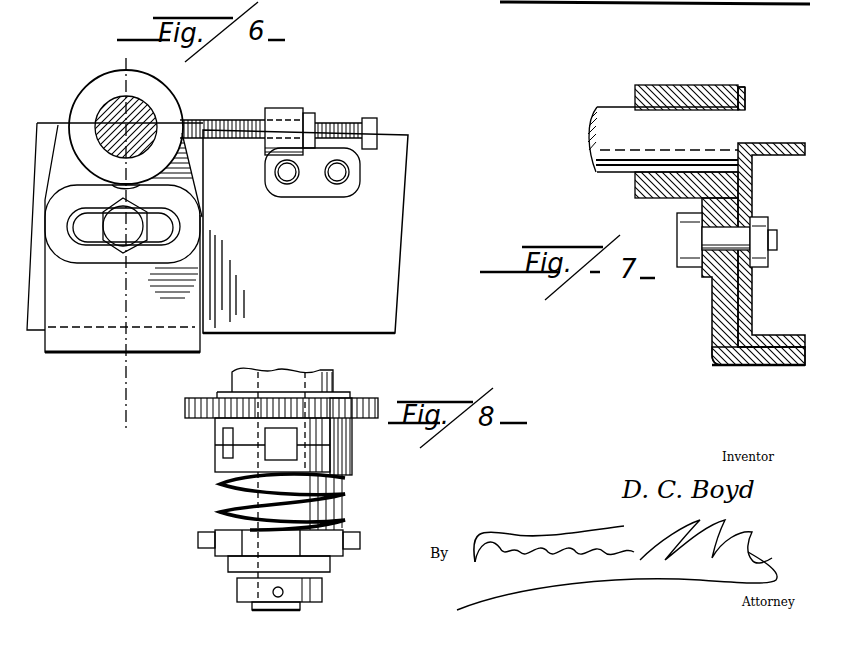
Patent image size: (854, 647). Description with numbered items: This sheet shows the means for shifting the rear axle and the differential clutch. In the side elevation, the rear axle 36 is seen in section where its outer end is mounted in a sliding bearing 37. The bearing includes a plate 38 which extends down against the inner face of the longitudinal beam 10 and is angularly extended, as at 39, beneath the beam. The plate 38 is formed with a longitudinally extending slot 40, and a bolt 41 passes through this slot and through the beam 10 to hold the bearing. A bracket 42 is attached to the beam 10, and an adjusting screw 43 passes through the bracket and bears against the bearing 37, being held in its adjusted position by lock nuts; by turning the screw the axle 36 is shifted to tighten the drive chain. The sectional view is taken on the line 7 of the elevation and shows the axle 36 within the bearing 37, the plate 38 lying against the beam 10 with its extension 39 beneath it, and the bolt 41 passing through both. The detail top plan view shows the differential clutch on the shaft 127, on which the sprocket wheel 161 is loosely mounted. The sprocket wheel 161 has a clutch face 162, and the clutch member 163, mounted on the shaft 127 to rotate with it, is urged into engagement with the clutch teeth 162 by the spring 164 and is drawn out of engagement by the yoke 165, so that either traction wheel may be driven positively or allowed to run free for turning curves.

In FIG. 6, the section line 7— 7 is at (118, 240).
In FIG. 6, the longitudinal beam 10 is at (358, 298).
In FIG. 7, the longitudinal beam 10 is at (720, 0).
In FIG. 6, the rear axle 36 is at (110, 122).
In FIG. 7, the rear axle 36 is at (610, 145).
In FIG. 6, the sliding bearing 37 is at (163, 101).
In FIG. 7, the sliding bearing 37 is at (635, 91).
In FIG. 6, the plate 38 is at (93, 317).
In FIG. 7, the plate 38 is at (720, 315).
In FIG. 6, the angular extension 39 is at (143, 352).
In FIG. 7, the angular extension 39 is at (778, 368).
In FIG. 6, the slot 40 is at (172, 220).
In FIG. 6, the bolt 41 is at (123, 228).
In FIG. 7, the bolt 41 is at (769, 258).
In FIG. 6, the bracket 42 is at (288, 110).
In FIG. 6, the adjusting screw 43 is at (217, 119).
In FIG. 8, the sprocket wheel 161 is at (190, 407).
In FIG. 8, the clutch face 162 is at (215, 432).
In FIG. 8, the clutch member 163 is at (348, 463).
In FIG. 8, the spring 164 is at (220, 500).
In FIG. 8, the yoke 165 is at (198, 542).
In FIG. 8, the shaft 127 is at (300, 570).